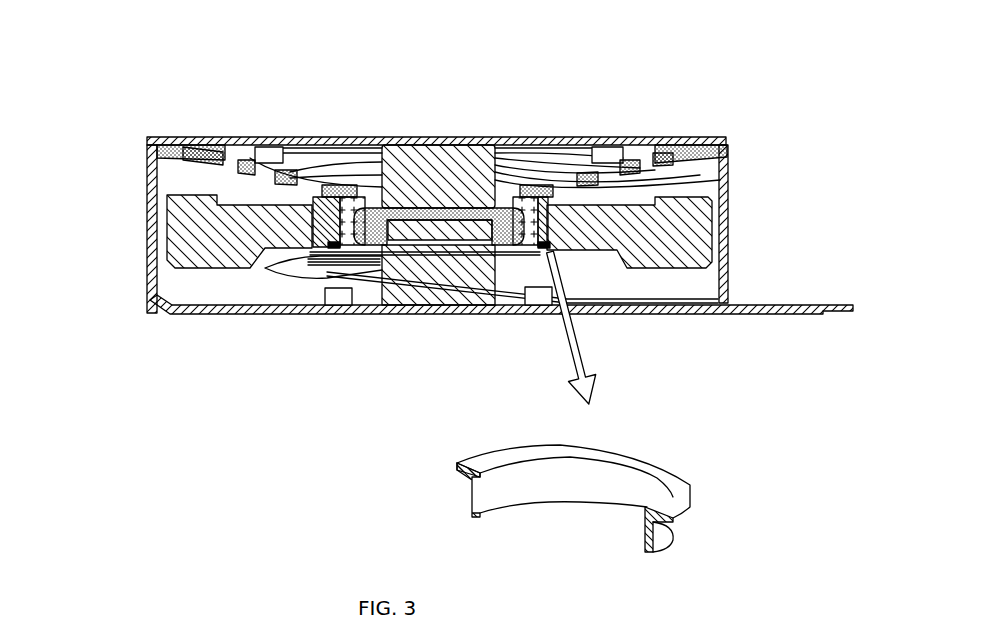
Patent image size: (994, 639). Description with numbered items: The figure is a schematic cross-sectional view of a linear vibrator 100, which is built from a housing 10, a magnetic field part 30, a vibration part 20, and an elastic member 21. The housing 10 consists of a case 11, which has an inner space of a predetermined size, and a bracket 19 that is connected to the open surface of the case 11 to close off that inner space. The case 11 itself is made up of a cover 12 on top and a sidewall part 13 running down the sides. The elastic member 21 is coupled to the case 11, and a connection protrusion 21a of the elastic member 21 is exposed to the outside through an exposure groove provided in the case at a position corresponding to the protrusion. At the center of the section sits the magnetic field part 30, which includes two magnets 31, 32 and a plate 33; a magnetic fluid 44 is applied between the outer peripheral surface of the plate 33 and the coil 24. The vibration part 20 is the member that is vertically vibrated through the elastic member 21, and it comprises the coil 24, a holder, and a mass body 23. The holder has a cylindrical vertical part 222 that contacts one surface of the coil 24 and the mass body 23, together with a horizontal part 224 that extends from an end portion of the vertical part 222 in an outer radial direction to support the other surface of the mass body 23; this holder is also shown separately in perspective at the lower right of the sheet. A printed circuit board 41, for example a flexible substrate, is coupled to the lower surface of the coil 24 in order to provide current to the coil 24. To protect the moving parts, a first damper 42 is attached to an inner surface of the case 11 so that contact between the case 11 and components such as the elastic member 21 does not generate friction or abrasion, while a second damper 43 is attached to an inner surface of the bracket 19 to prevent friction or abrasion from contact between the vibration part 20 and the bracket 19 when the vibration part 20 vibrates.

The linear vibrator 100 is at (505, 92).
The housing 10 is at (435, 214).
The case 11 is at (388, 207).
The cover 12 is at (165, 137).
The sidewall part 13 is at (123, 229).
The bracket 19 is at (157, 296).
The vibration part 20 is at (500, 238).
The elastic member 21 is at (656, 150).
The connection protrusion 21a is at (727, 147).
The vertical part 222 is at (665, 545).
The horizontal part 224 is at (675, 492).
The mass body 23 is at (683, 262).
The coil 24 is at (542, 195).
The magnetic field part 30 is at (439, 305).
The magnet 31 is at (376, 222).
The magnet 32 is at (440, 294).
The plate 33 is at (410, 235).
The printed circuit board 41 is at (275, 272).
The first damper 42 is at (268, 140).
The second damper 43 is at (336, 305).
The magnetic fluid 44 is at (527, 300).